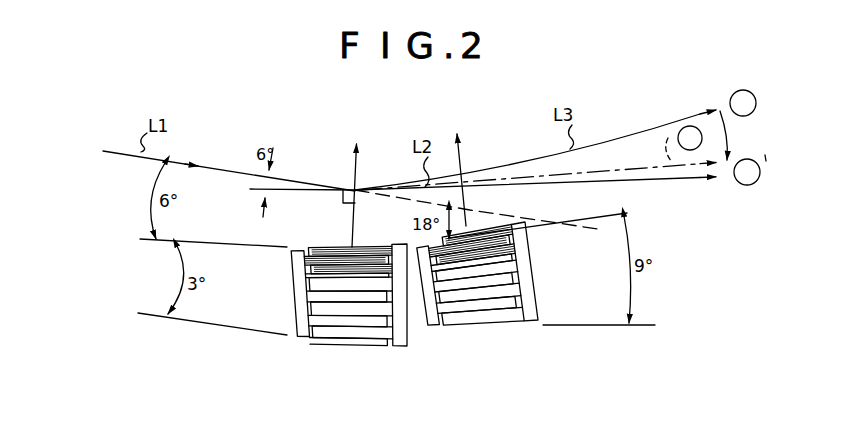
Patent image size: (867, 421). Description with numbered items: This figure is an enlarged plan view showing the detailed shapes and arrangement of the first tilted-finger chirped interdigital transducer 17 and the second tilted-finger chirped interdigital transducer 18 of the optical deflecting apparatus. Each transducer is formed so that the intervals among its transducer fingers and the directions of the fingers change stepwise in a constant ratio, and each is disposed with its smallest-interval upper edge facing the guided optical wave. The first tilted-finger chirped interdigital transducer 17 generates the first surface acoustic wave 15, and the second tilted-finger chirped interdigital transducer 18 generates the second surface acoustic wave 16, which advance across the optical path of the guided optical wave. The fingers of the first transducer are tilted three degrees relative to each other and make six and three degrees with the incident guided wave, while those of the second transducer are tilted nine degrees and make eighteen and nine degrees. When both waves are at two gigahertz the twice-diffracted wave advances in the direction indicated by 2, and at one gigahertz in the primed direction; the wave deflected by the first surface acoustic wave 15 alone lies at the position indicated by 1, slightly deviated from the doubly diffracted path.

The first surface acoustic wave 15 is at (353, 167).
The second surface acoustic wave 16 is at (464, 169).
The first tilted-finger chirped interdigital transducer 17 is at (297, 338).
The second tilted-finger chirped interdigital transducer 18 is at (439, 333).
The position of the optical path deflected by the first surface acoustic wave alone 1 is at (684, 144).
The direction of the guided optical wave after double diffraction 2 is at (743, 137).